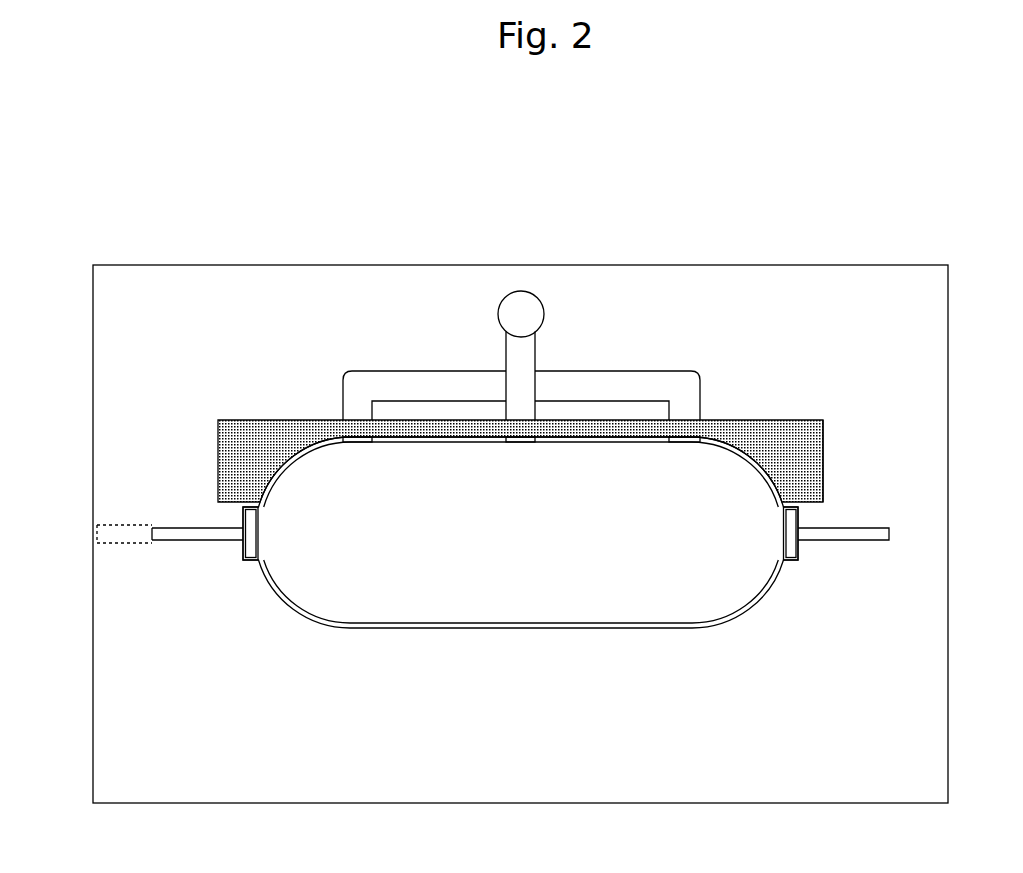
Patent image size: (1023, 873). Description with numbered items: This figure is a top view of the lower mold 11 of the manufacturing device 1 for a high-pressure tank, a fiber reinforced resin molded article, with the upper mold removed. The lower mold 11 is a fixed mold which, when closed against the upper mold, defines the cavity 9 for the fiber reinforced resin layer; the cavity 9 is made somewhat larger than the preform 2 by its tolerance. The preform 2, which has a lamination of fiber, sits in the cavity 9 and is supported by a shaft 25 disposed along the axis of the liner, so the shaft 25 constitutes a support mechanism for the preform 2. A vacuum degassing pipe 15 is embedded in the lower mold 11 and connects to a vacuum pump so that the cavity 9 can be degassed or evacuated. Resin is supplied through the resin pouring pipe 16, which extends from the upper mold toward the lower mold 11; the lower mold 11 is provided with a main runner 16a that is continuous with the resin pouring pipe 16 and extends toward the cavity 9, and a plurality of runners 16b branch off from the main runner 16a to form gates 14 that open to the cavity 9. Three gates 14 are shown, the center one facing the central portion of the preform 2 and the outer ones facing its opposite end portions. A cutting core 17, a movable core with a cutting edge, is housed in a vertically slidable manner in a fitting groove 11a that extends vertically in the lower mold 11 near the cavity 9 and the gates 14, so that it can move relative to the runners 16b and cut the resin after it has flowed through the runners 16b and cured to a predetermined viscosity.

The manufacturing device 1 is at (912, 186).
The preform 2 is at (578, 592).
The cavity 9 is at (463, 622).
The lower mold 11 is at (916, 717).
The fitting groove 11a is at (796, 446).
The gates 14 is at (358, 440).
The vacuum degassing pipe 15 is at (97, 527).
The resin pouring pipe 16 is at (499, 303).
The main runner 16a is at (525, 350).
The runners 16b is at (343, 395).
The cutting core 17 is at (245, 450).
The shaft 25 is at (868, 536).